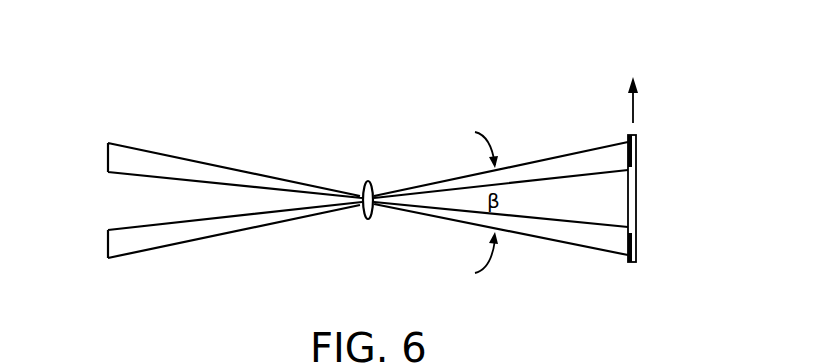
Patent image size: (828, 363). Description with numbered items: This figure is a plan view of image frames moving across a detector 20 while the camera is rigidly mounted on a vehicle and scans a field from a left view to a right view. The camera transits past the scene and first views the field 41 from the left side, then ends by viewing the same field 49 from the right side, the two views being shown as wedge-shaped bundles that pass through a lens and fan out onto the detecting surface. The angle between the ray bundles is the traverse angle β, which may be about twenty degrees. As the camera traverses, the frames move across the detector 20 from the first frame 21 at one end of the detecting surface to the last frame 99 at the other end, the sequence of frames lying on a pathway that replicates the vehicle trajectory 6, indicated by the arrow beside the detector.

The field viewed from the left side 41 is at (106, 159).
The field viewed from the right side 49 is at (106, 242).
The detector 20 is at (636, 205).
The last frame 99 is at (636, 157).
The first frame 21 is at (636, 247).
The vehicle trajectory 6 is at (636, 110).